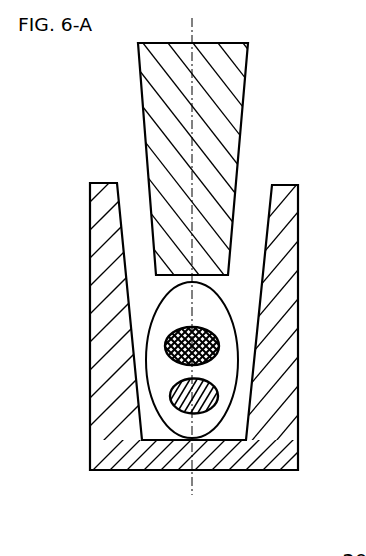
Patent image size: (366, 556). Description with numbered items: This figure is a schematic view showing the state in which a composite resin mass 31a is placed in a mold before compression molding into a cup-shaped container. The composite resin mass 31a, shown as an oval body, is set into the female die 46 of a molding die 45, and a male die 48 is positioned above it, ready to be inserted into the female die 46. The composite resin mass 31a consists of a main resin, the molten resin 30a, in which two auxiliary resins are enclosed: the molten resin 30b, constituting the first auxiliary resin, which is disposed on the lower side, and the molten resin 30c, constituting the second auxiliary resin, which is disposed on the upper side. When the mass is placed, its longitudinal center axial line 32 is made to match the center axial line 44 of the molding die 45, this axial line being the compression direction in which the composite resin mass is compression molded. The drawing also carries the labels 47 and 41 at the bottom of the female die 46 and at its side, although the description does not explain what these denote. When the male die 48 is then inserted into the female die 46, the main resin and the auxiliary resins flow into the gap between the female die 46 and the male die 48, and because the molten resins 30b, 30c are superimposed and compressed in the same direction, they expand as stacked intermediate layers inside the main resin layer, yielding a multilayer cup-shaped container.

The center axial line 44 is at (192, 30).
The male die 48 is at (227, 108).
The molding die 45 is at (292, 145).
The female die 46 is at (100, 378).
The composite resin mass 31a is at (234, 304).
The molten resin 30c is at (211, 344).
The molten resin 30b is at (211, 388).
The molten resin 30a is at (163, 380).
The die cavity bottom 47 is at (193, 427).
The longitudinal center axial line 32 is at (208, 430).
The cavity 41 is at (361, 366).